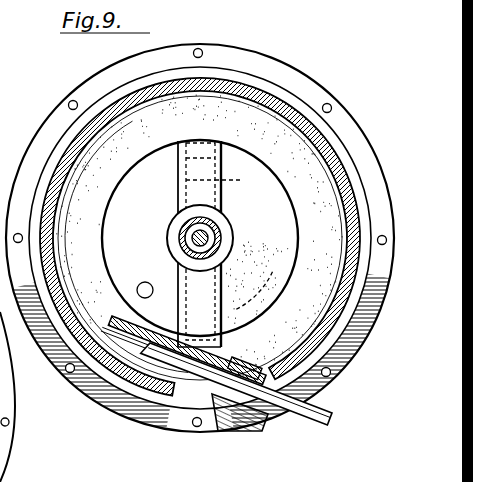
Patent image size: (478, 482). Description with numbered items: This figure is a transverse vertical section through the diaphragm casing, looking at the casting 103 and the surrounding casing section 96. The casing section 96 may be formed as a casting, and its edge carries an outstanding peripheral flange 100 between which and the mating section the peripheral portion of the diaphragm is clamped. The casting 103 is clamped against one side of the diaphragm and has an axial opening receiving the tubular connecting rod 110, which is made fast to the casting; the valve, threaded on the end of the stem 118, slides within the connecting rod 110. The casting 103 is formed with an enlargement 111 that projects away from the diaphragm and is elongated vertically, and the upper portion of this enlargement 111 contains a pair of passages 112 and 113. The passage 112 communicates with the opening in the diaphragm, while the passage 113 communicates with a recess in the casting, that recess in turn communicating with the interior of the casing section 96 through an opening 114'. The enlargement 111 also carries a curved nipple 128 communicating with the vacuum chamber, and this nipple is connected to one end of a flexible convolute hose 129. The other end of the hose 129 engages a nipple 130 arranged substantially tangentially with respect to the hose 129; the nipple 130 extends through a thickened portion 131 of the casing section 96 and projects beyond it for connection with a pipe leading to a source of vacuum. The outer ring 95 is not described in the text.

The casing flange 95 is at (50, 116).
The casing section 96 is at (166, 82).
The peripheral flanges 100 is at (344, 124).
The casting 103 is at (178, 288).
The tubular connecting rod 110 is at (212, 238).
The enlargement 111 is at (207, 244).
The passage 112 is at (178, 157).
The passage 113 is at (222, 187).
The opening 114' is at (144, 274).
The stem 118 is at (206, 244).
The curved nipple 128 is at (290, 293).
The flexible convolute hose 129 is at (96, 215).
The nipple 130 is at (335, 420).
The thickened portion 131 is at (236, 432).